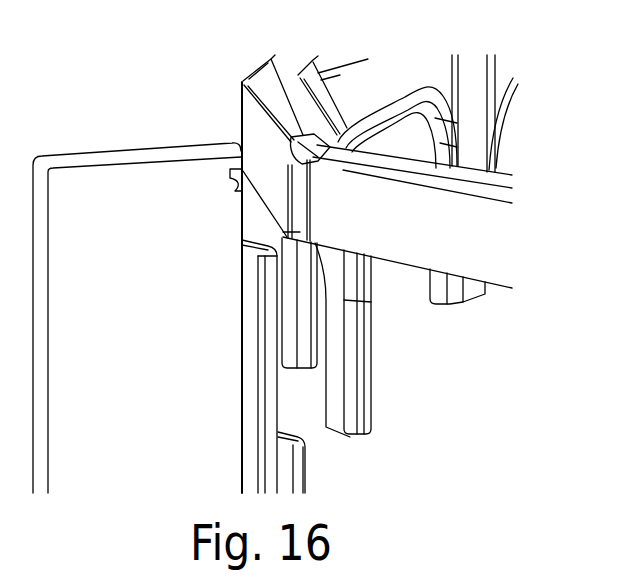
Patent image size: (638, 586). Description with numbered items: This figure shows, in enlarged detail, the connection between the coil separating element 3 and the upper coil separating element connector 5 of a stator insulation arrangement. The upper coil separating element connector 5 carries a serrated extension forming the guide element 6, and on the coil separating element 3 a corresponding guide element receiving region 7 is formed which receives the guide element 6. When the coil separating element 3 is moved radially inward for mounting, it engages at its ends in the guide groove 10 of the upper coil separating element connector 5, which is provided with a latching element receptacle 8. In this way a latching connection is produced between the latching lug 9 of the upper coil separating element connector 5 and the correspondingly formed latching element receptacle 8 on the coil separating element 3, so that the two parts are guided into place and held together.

The coil separating element 3 is at (138, 192).
The upper coil separating element connector 5 is at (487, 236).
The guide element 6 is at (367, 377).
The guide element receiving region 7 is at (280, 410).
The latching element receptacle 8 is at (233, 187).
The latching lug 9 is at (293, 155).
The guide groove 10 is at (300, 203).